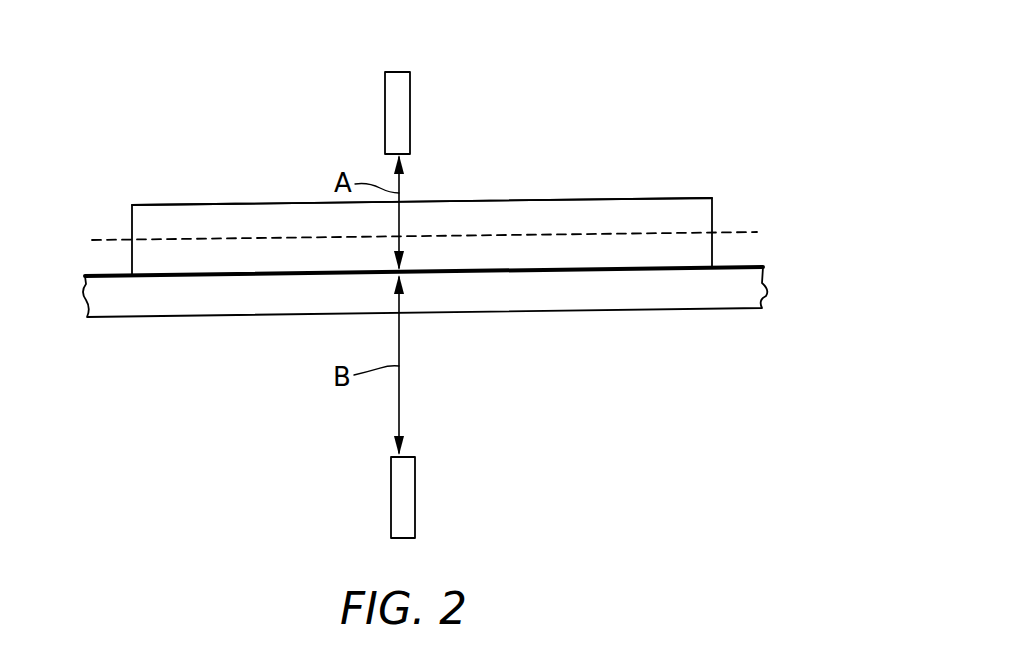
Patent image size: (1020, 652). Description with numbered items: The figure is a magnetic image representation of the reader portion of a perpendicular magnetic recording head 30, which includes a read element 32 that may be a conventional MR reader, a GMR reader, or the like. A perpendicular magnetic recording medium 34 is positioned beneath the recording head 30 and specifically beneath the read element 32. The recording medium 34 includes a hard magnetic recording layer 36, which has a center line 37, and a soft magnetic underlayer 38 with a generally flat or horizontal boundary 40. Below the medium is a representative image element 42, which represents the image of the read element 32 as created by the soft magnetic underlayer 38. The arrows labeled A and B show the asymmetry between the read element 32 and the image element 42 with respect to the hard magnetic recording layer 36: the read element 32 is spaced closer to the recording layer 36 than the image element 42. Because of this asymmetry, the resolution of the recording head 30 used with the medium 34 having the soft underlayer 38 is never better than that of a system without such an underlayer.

The perpendicular magnetic recording head 30 is at (646, 108).
The read element 32 is at (385, 114).
The perpendicular magnetic recording medium 34 is at (724, 197).
The hard magnetic recording layer 36 is at (485, 208).
The center line 37 is at (738, 232).
The soft magnetic underlayer 38 is at (740, 290).
The boundary 40 is at (547, 273).
The image element 42 is at (415, 493).